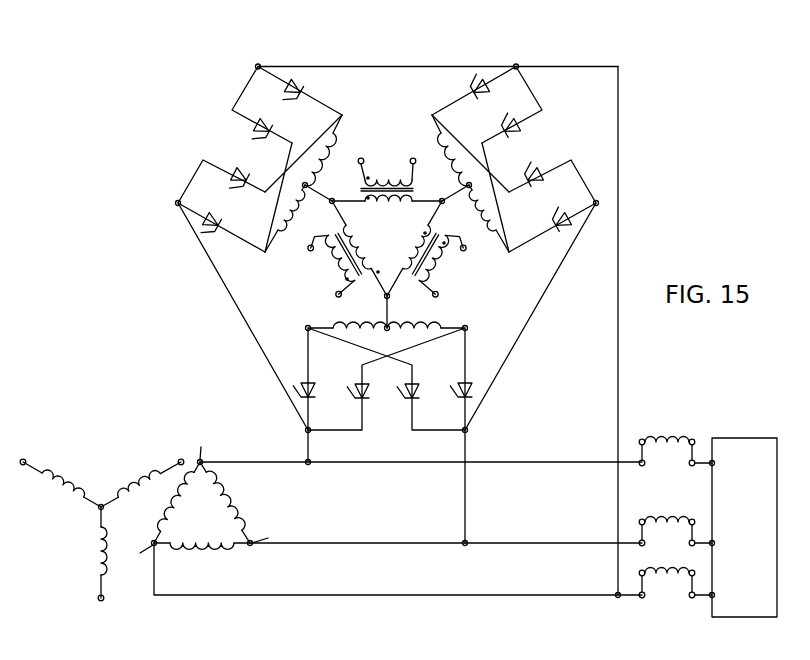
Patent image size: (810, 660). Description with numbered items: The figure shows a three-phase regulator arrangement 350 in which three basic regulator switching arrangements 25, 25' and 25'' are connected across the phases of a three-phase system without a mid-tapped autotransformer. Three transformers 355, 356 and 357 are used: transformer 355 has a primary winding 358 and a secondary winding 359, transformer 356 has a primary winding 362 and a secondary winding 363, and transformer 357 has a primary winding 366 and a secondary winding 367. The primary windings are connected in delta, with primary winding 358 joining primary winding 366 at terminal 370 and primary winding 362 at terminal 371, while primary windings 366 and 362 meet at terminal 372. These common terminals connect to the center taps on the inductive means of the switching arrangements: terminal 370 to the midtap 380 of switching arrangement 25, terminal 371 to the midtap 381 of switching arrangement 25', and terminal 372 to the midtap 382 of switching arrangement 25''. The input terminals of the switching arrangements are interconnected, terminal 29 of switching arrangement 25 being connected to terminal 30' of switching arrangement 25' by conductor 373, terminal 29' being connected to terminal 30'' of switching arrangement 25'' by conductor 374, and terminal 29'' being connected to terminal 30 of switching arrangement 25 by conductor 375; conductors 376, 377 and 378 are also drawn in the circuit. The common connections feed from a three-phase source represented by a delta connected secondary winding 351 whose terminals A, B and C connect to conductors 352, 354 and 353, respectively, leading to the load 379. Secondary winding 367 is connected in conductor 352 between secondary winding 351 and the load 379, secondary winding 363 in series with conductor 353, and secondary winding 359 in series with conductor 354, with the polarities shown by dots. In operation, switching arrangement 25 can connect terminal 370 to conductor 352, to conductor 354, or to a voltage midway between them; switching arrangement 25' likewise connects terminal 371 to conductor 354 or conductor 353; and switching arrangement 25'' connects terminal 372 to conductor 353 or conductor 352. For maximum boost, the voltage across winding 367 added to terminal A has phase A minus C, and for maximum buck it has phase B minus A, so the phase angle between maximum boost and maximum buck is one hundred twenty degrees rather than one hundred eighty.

The three-phase regulator arrangement 350 is at (373, 38).
The conductor 373 is at (423, 66).
The conductor 378 is at (618, 395).
The terminal 29 is at (274, 56).
The terminal 30 is at (153, 211).
The basic regulator switching arrangement 25 is at (260, 160).
The midtap 380 is at (290, 164).
The terminal 370 is at (308, 186).
The conductor 375 is at (231, 297).
The terminal 30' is at (537, 58).
The terminal 29' is at (625, 196).
The basic regulator switching arrangement 25' is at (514, 160).
The midtap 381 is at (489, 165).
The terminal 371 is at (444, 204).
The conductor 374 is at (549, 289).
The primary winding 358 is at (368, 203).
The transformer 355 is at (403, 172).
The secondary winding 359 is at (364, 158).
The primary winding 366 is at (350, 240).
The transformer 357 is at (330, 295).
The secondary winding 367 is at (330, 251).
The primary winding 362 is at (409, 258).
The transformer 356 is at (467, 285).
The secondary winding 363 is at (470, 252).
The terminal 372 is at (385, 298).
The midtap 382 is at (389, 312).
The basic regulator switching arrangement 25'' is at (382, 385).
The terminal 29'' is at (286, 421).
The terminal 30'' is at (490, 435).
The conductor 376 is at (307, 446).
The conductor 377 is at (465, 452).
The conductor 352 is at (229, 461).
The conductor 353 is at (349, 542).
The conductor 354 is at (349, 594).
The delta connected secondary winding 351 is at (218, 520).
The load 379 is at (729, 437).